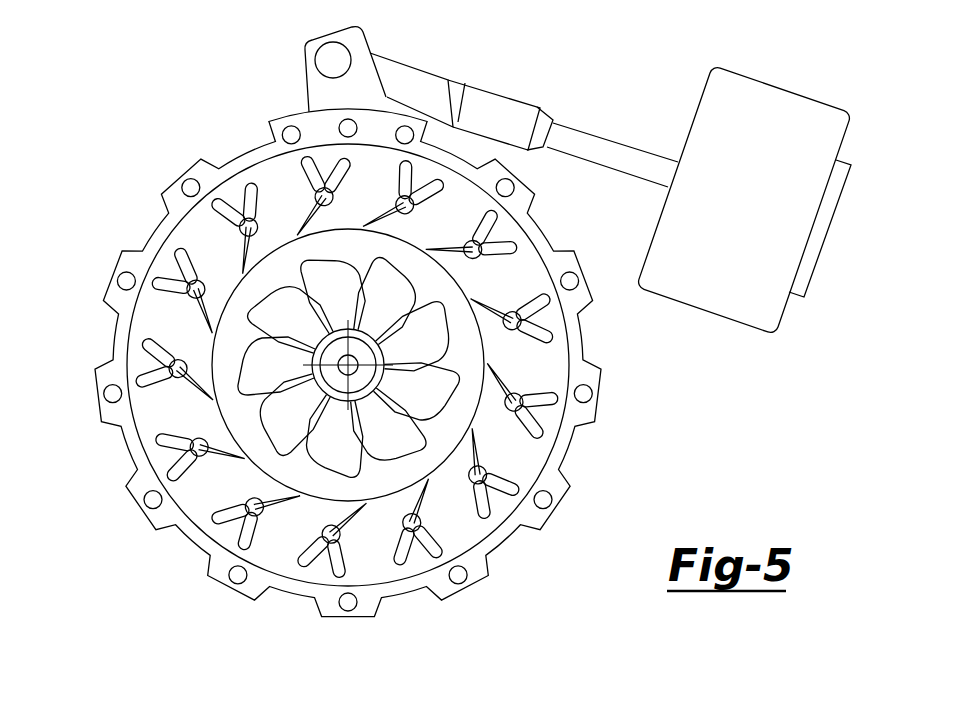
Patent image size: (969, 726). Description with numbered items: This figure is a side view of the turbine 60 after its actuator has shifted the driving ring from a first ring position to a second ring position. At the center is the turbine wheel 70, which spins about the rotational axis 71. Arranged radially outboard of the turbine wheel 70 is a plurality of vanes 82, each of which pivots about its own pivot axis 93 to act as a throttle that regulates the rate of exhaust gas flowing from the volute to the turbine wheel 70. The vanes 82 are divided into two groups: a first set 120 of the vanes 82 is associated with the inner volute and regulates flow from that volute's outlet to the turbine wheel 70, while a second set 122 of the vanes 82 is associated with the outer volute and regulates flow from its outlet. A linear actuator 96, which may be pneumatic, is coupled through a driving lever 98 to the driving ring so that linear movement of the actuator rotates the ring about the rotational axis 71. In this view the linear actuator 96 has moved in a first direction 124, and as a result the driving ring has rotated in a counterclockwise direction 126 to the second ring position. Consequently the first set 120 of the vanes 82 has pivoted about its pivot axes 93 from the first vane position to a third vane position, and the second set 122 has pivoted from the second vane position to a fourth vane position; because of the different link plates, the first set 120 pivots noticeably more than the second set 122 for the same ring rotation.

The turbine 60 is at (145, 100).
The turbine wheel 70 is at (398, 258).
The rotational axis 71 is at (352, 364).
The vanes 82 is at (540, 296).
The pivot axis 93 is at (195, 440).
The linear actuator 96 is at (510, 100).
The driving lever 98 is at (333, 92).
The first set of the vanes 120 is at (192, 240).
The second set of the vanes 122 is at (533, 448).
The first direction 124 is at (608, 72).
The counterclockwise direction 126 is at (227, 83).